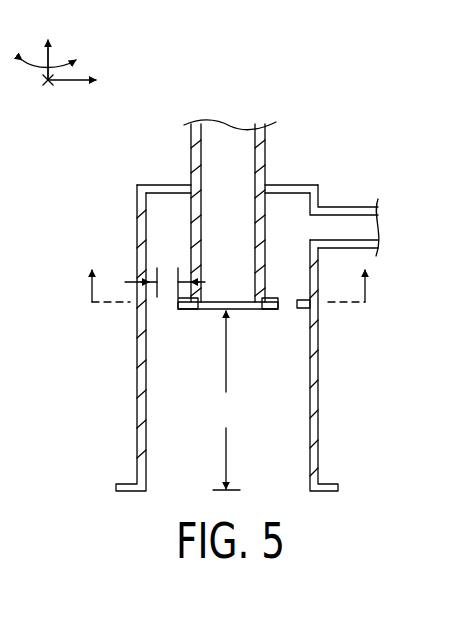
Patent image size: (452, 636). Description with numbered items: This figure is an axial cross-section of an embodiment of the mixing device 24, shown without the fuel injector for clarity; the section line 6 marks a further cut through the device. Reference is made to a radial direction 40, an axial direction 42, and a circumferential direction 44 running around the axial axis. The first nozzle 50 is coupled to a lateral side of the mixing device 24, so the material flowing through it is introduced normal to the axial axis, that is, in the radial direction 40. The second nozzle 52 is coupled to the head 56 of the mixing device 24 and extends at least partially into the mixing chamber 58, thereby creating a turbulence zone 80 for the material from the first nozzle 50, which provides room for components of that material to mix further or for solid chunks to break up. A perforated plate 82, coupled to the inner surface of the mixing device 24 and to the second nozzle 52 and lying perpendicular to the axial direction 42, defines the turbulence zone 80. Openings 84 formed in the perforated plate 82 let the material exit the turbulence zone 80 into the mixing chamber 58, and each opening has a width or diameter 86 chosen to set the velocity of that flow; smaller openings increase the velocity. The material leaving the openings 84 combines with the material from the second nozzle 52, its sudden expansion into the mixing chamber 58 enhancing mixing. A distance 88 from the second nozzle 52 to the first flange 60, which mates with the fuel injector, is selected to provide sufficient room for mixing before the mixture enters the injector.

The section line 6- 6 is at (228, 281).
The mixing device 24 is at (273, 200).
The radial direction 40 is at (66, 86).
The axial direction 42 is at (52, 46).
The circumferential direction 44 is at (74, 66).
The first nozzle 50 is at (348, 205).
The second nozzle 52 is at (266, 168).
The head 56 is at (240, 314).
The mixing chamber 58 is at (243, 314).
The first flange 60 is at (323, 486).
The turbulence zone 80 is at (179, 239).
The perforated plate 82 is at (157, 302).
The openings 84 is at (168, 318).
The diameter 86 is at (137, 270).
The distance 88 is at (226, 400).